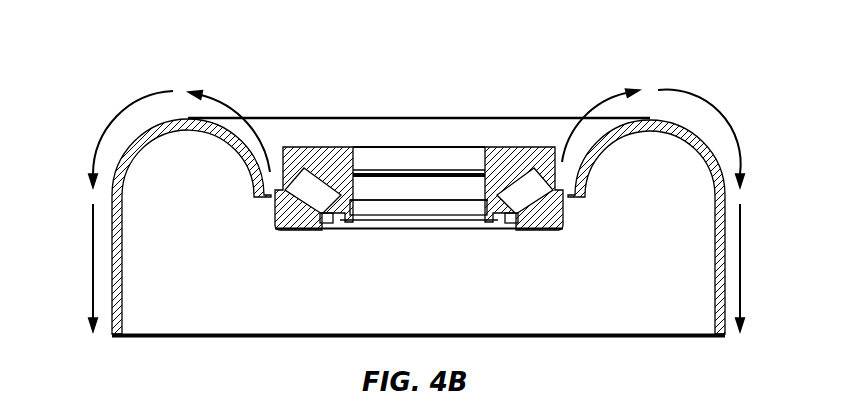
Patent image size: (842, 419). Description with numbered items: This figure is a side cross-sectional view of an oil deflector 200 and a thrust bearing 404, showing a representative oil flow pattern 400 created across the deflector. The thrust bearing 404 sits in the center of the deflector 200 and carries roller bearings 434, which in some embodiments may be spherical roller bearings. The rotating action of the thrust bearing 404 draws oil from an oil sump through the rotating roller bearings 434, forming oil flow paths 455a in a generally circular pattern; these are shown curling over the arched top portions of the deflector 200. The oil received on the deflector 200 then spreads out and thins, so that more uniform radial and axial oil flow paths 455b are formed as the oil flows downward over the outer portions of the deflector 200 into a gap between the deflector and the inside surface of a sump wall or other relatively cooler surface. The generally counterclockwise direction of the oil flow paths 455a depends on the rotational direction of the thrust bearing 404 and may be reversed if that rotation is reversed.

The oil flow pattern 400 is at (628, 52).
The oil deflector 200 is at (712, 316).
The thrust bearing 404 is at (427, 147).
The roller bearings 434 is at (513, 192).
The oil flow paths 455a is at (257, 132).
The oil flow paths 455b is at (125, 110).